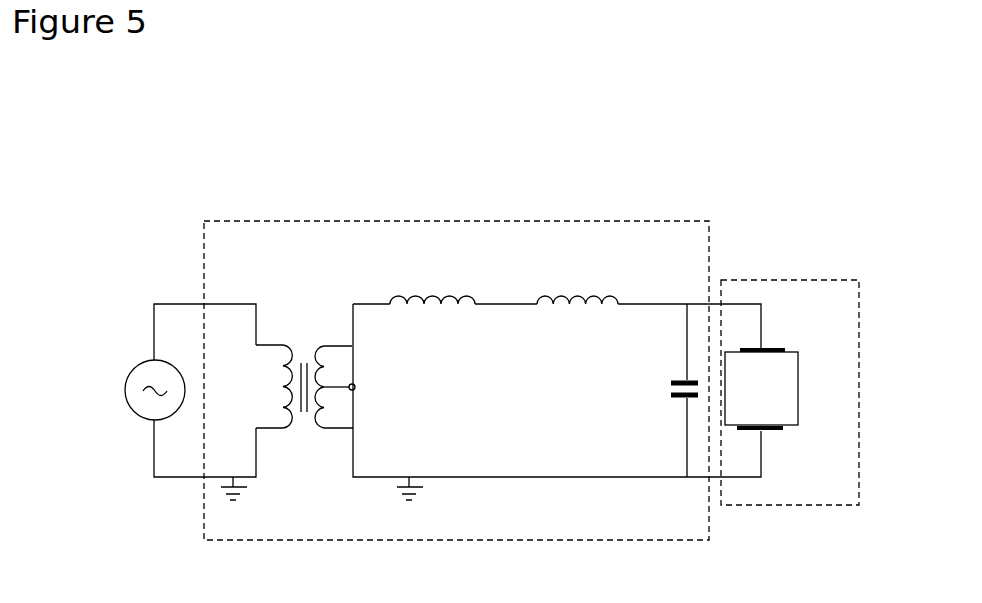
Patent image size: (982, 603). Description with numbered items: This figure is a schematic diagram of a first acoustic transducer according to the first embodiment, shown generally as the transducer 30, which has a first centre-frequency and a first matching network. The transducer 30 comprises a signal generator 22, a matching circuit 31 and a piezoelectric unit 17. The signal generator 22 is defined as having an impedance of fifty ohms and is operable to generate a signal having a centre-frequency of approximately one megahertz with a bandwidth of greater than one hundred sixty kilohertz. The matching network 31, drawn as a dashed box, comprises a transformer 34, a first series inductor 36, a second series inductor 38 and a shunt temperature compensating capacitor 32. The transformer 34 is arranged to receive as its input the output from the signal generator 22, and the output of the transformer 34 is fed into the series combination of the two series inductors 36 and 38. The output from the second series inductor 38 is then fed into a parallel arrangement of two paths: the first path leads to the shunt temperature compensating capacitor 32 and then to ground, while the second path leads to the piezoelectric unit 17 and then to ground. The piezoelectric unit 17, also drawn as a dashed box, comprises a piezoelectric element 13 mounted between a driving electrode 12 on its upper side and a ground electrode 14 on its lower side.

The transducer 30 is at (167, 151).
The signal generator 22 is at (136, 362).
The matching circuit 31 is at (248, 249).
The transformer 34 is at (314, 333).
The first series inductor 36 is at (420, 310).
The second series inductor 38 is at (570, 310).
The shunt temperature compensating capacitor 32 is at (666, 392).
The piezoelectric unit 17 is at (843, 316).
The piezoelectric element 13 is at (771, 404).
The driving electrode 12 is at (764, 348).
The ground electrode 14 is at (787, 440).